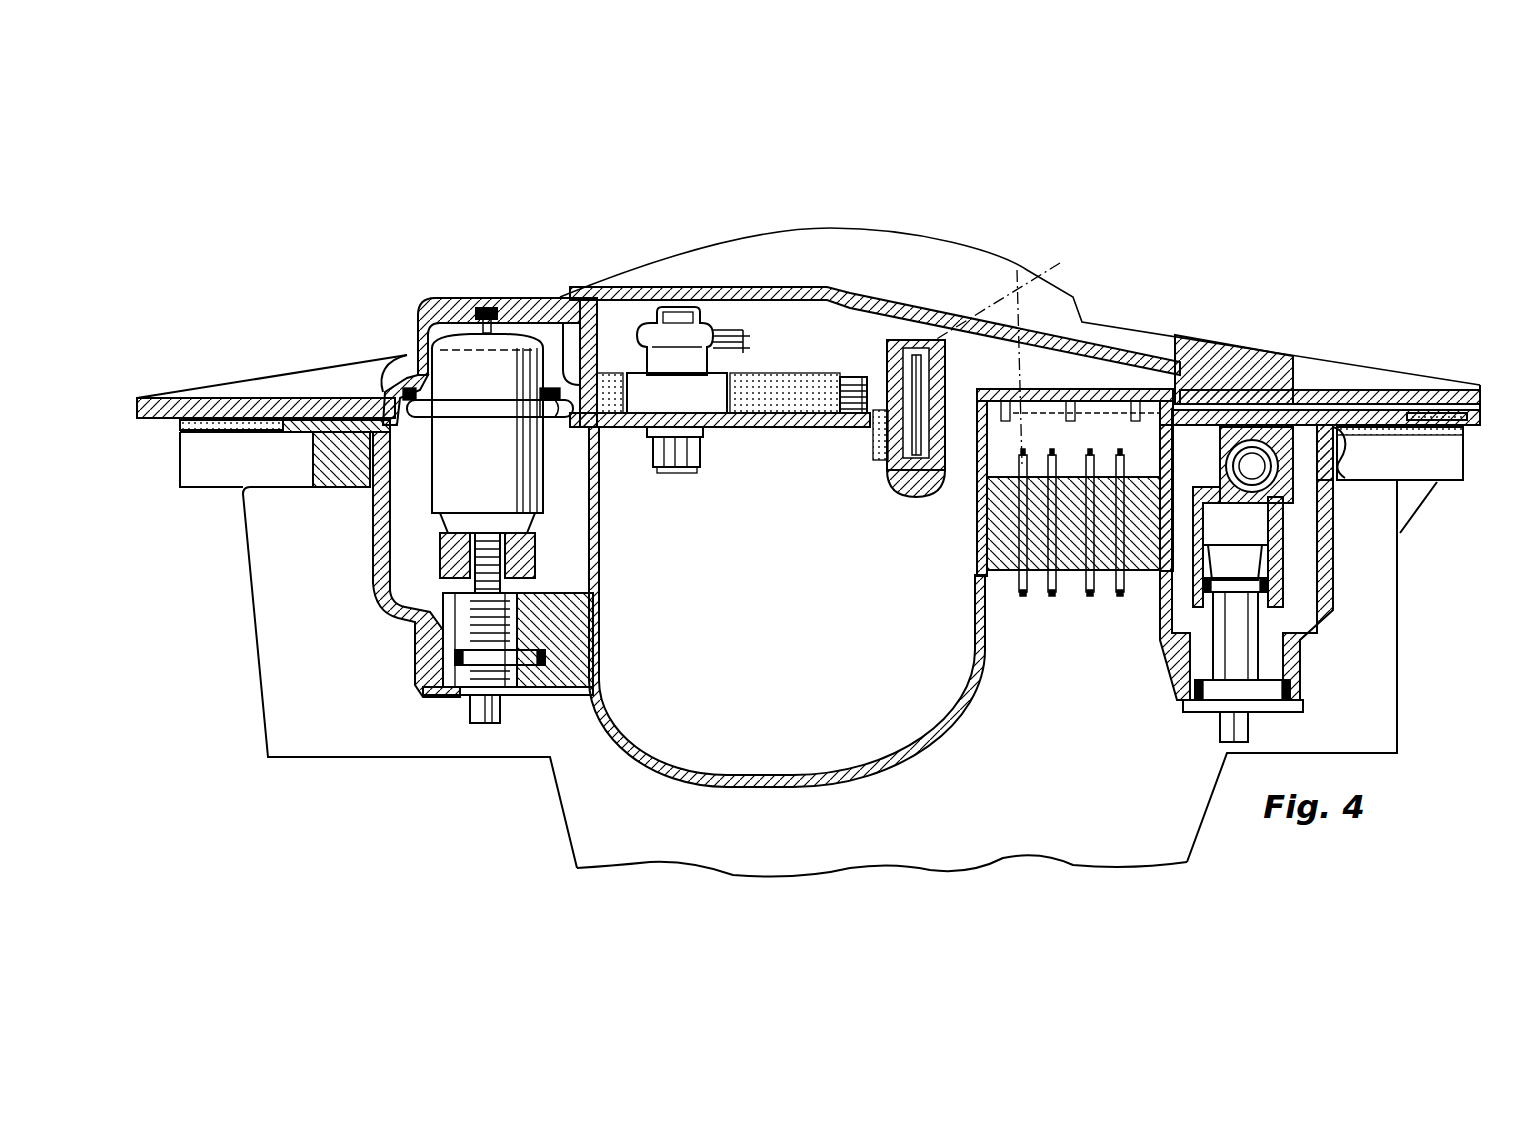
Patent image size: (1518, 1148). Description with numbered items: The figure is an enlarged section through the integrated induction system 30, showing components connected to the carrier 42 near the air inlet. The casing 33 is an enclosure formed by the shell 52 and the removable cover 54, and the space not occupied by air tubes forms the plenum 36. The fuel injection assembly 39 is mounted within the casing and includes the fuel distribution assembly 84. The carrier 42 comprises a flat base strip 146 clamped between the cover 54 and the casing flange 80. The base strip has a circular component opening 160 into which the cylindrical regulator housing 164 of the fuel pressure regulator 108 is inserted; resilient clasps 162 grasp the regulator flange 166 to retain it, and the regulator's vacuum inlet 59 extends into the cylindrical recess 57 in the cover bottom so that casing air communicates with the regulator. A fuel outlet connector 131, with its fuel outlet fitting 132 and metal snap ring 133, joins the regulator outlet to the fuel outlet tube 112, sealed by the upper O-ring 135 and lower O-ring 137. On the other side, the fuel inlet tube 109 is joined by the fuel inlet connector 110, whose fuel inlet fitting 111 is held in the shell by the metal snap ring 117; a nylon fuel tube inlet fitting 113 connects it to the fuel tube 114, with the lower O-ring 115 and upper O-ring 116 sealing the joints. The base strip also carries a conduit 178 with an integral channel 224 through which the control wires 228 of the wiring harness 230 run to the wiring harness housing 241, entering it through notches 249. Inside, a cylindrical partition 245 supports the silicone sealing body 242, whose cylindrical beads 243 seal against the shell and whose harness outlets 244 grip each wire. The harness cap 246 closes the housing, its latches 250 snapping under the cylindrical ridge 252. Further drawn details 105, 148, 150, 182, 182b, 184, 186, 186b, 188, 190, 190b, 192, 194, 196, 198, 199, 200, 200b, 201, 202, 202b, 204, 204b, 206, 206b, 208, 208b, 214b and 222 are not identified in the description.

The integrated induction system 30 is at (1040, 214).
The casing 33 is at (1275, 327).
The plenum 36 is at (670, 700).
The fuel injection assembly 39 is at (425, 498).
The carrier 42 is at (770, 430).
The shell 52 is at (1306, 620).
The cover 54 is at (810, 226).
The cylindrical recess 57 is at (486, 308).
The vacuum inlet 59 is at (507, 313).
The casing flange 80 is at (180, 488).
The fuel distribution assembly 84 is at (1292, 526).
The reservoir wall 105 is at (771, 678).
The fuel pressure regulator 108 is at (543, 498).
The fuel inlet tube 109 is at (1220, 733).
The fuel inlet connector 110 is at (1187, 660).
The fuel inlet fitting 111 is at (1278, 657).
The fuel outlet tube 112 is at (482, 723).
The fuel tube inlet fitting 113 is at (1210, 494).
The fuel tube 114 is at (1279, 390).
The lower O-ring 115 is at (1297, 690).
The upper O-ring 116 is at (1262, 583).
The metal snap ring 117 is at (1197, 630).
The fuel outlet connector 131 is at (438, 622).
The fuel outlet fitting 132 is at (417, 650).
The metal snap ring 133 is at (520, 613).
The upper O-ring 135 is at (445, 562).
The lower O-ring 137 is at (537, 660).
The base strip 146 is at (1390, 417).
The plate 148 is at (1332, 405).
The seal 150 is at (362, 412).
The component opening 160 is at (407, 357).
The clasps 162 is at (387, 478).
The regulator housing 164 is at (547, 480).
The regulator flange 166 is at (476, 408).
The conduit 178 is at (792, 358).
The connector body 182 is at (970, 342).
The circuit block 182b is at (677, 393).
The potting material 184 is at (838, 407).
The terminal 186 is at (1000, 448).
The web 186b is at (694, 430).
The connector 188 is at (895, 495).
The connector pin 190 is at (943, 465).
The sensor 190b is at (628, 332).
The connector sleeve 192 is at (900, 507).
The connector base 194 is at (880, 515).
The connector seal 196 is at (918, 505).
The connector cap 198 is at (891, 338).
The connector wall 199 is at (910, 340).
The terminal block 200 is at (1018, 285).
The sensor body 200b is at (724, 333).
The axis 201 is at (1027, 342).
The seal 202 is at (870, 453).
The tube 202b is at (690, 472).
The connector housing 204 is at (953, 405).
The tube fitting 204b is at (643, 430).
The gasket 206 is at (873, 438).
The tube 206b is at (657, 453).
The seal 208 is at (887, 473).
The tube 208b is at (673, 467).
The sensor lead 214b is at (745, 357).
The direction arrow 222 is at (645, 308).
The channel 224 is at (853, 377).
The control wires 228 is at (862, 376).
The wiring harness 230 is at (1168, 388).
The wiring harness housing 241 is at (960, 500).
The sealing body 242 is at (978, 565).
The cylindrical beads 243 is at (1152, 536).
The harness outlets 244 is at (1055, 572).
The partition 245 is at (1073, 490).
The harness cap 246 is at (1093, 390).
The notches 249 is at (1008, 410).
The latches 250 is at (1062, 388).
The cylindrical ridge 252 is at (952, 438).